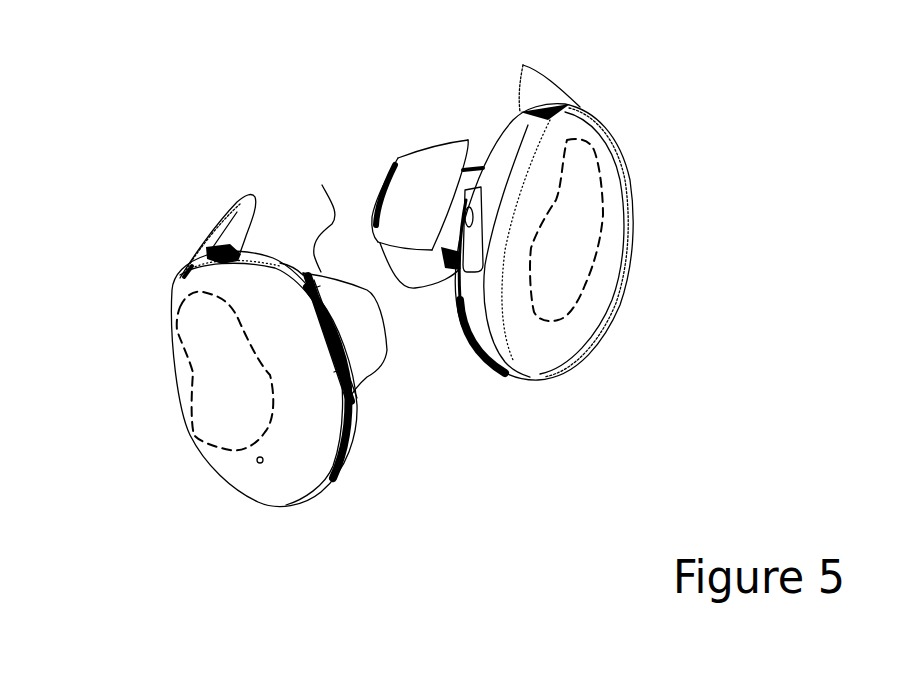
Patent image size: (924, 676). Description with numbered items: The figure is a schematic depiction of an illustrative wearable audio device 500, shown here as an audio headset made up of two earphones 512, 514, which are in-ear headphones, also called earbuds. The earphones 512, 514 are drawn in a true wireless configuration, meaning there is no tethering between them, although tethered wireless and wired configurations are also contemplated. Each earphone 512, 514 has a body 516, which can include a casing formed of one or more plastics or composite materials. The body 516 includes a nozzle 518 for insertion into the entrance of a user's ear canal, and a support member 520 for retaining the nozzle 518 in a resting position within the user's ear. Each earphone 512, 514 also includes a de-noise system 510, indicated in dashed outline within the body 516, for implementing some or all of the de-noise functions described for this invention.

The wearable audio device 500 is at (838, 238).
The de-noise system 510 is at (207, 385).
The earphone 512 is at (239, 323).
The earphone 514 is at (497, 222).
The body 516 is at (305, 468).
The nozzle 518 is at (398, 158).
The support member 520 is at (190, 252).